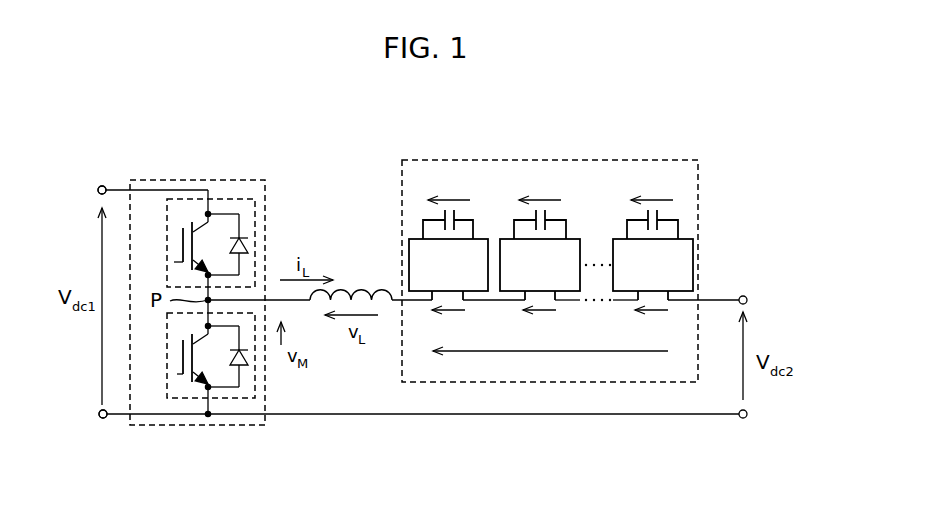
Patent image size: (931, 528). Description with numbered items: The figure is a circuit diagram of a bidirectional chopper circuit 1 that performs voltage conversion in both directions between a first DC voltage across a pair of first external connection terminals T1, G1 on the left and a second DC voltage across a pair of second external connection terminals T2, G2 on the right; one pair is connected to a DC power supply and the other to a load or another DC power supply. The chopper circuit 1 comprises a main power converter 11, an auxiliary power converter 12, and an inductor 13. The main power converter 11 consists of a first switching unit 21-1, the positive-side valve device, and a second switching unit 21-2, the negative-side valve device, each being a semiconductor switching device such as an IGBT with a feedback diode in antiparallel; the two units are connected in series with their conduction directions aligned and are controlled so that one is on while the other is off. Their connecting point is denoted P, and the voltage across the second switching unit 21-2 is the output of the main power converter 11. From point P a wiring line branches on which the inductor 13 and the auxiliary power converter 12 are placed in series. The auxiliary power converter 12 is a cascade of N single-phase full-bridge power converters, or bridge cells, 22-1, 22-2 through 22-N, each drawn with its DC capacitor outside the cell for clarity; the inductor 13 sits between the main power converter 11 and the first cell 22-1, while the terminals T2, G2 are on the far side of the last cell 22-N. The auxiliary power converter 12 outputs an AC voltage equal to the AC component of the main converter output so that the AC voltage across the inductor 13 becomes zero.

The bidirectional chopper circuit 1 is at (576, 123).
The main power converter 11 is at (212, 180).
The auxiliary power converter 12 is at (630, 160).
The inductor 13 is at (370, 290).
The first switching unit 21-1 is at (255, 199).
The second switching unit 21-2 is at (238, 399).
The single-phase full-bridge power converter 22-1 is at (409, 236).
The single-phase full-bridge power converter 22-2 is at (500, 238).
The single-phase full-bridge power converter 22-N is at (693, 238).
The first external connection terminal T1 is at (104, 185).
The second external connection terminal T2 is at (747, 296).
The first external connection terminal G1 is at (103, 420).
The second external connection terminal G2 is at (748, 418).